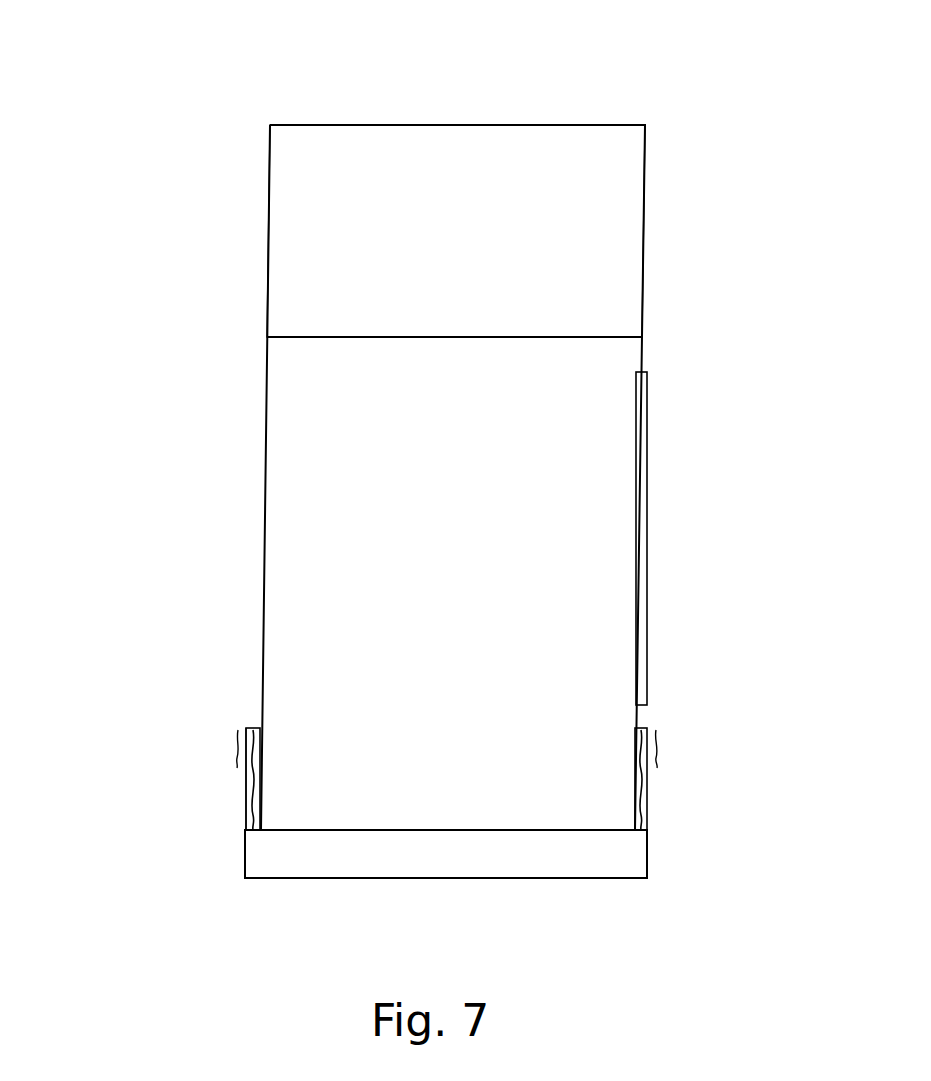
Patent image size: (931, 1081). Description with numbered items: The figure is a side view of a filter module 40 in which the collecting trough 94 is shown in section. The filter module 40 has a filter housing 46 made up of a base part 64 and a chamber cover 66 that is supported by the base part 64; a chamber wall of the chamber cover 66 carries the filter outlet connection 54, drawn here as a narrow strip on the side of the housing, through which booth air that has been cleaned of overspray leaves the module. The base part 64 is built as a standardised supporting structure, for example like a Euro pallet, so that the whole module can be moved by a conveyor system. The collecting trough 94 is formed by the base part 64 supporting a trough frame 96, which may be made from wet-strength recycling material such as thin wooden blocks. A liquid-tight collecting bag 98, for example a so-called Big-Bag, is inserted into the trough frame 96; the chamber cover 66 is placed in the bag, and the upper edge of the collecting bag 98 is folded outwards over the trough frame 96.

The filter module 40 is at (401, 118).
The filter housing 46 is at (507, 160).
The chamber cover 66 is at (303, 389).
The filter outlet connection 54 is at (645, 370).
The collecting bag 98 is at (258, 727).
The collecting trough 94 is at (641, 724).
The trough frame 96 is at (240, 794).
The base part 64 is at (640, 848).